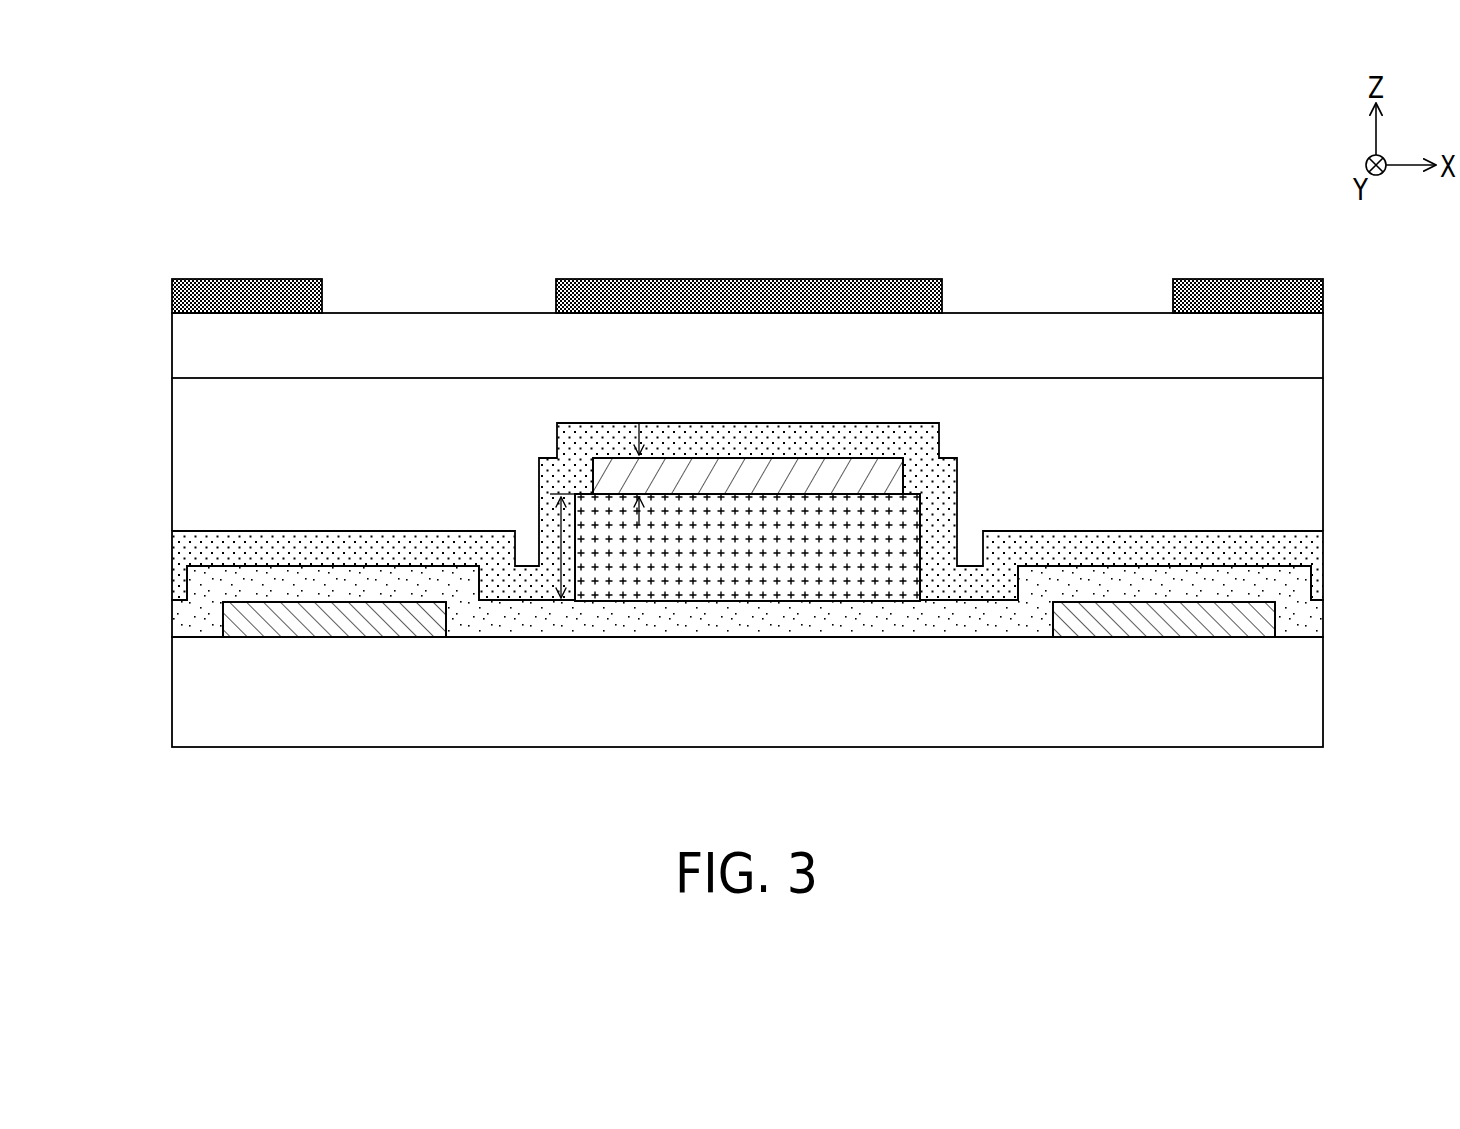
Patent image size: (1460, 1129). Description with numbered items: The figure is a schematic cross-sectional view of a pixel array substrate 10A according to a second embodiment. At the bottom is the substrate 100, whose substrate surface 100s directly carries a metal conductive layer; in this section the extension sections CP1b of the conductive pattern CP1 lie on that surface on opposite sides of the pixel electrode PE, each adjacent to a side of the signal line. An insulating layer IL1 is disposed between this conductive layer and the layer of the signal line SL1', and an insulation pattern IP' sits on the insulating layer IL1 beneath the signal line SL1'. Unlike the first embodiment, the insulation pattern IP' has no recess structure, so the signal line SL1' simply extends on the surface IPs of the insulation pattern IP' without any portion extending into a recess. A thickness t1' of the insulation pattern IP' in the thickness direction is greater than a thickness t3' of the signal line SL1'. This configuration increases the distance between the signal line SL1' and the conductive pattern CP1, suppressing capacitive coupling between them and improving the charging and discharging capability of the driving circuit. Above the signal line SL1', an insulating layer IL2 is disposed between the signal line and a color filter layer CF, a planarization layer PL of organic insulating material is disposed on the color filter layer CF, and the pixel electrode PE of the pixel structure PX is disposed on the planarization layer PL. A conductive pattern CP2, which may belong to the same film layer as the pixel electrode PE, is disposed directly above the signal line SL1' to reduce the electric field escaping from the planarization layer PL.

The substrate 100 is at (1315, 690).
The substrate surface 100s is at (197, 634).
The insulating layer IL1 is at (1315, 619).
The insulating layer IL2 is at (1315, 548).
The extension section CP1b is at (749, 701).
The conductive pattern CP1 is at (323, 637).
The conductive pattern CP2 is at (842, 290).
The insulation pattern IP' is at (747, 647).
The surface IPs is at (913, 490).
The signal line SL1' is at (748, 361).
The thickness of the insulation pattern t1' is at (561, 546).
The thickness of the signal line t3' is at (656, 474).
The color filter layer CF is at (1315, 453).
The planarization layer PL is at (1315, 348).
The pixel electrode PE is at (747, 271).
The pixel structure PX is at (230, 287).
The pixel array substrate 10A is at (1452, 821).